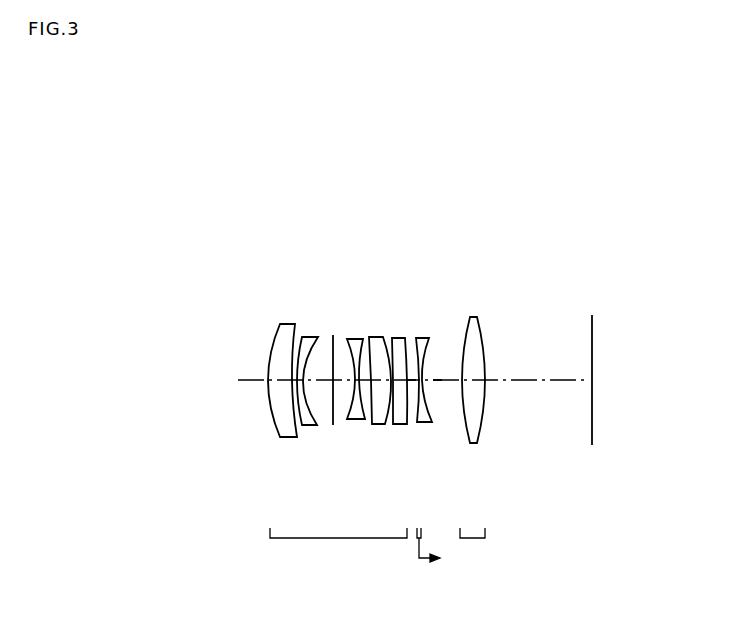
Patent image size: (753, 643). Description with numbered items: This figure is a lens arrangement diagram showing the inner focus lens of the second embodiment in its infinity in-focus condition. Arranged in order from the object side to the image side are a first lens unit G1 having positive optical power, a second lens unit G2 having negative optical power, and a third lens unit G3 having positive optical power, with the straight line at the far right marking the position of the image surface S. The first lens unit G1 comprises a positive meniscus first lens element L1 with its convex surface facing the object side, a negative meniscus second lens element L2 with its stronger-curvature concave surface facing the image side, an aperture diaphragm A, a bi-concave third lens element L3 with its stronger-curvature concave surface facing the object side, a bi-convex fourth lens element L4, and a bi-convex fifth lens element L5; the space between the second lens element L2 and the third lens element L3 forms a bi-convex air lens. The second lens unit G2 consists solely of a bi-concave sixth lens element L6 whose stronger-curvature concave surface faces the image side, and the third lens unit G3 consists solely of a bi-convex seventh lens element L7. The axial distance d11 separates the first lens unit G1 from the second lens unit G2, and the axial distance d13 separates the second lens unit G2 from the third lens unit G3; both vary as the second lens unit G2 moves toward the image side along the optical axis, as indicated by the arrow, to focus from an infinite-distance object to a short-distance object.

The first lens element L1 is at (288, 325).
The second lens element L2 is at (308, 335).
The aperture diaphragm A is at (333, 335).
The third lens element L3 is at (358, 338).
The fourth lens element L4 is at (378, 337).
The fifth lens element L5 is at (402, 338).
The sixth lens element L6 is at (425, 338).
The seventh lens element L7 is at (472, 316).
The image surface S is at (593, 350).
The axial distance d11 is at (412, 382).
The axial distance d13 is at (442, 381).
The first lens unit G1 is at (338, 523).
The second lens unit G2 is at (417, 535).
The third lens unit G3 is at (473, 523).